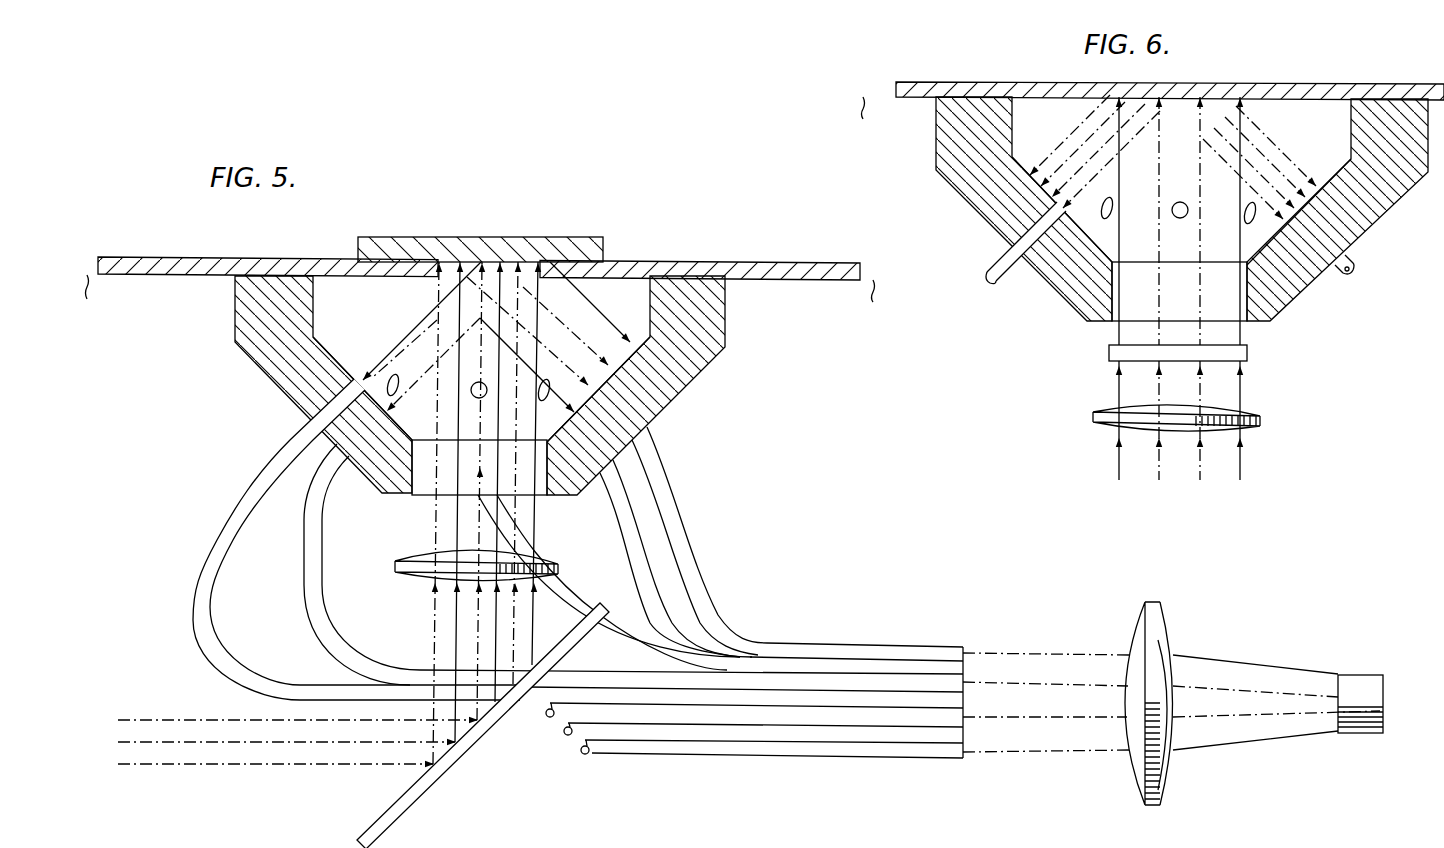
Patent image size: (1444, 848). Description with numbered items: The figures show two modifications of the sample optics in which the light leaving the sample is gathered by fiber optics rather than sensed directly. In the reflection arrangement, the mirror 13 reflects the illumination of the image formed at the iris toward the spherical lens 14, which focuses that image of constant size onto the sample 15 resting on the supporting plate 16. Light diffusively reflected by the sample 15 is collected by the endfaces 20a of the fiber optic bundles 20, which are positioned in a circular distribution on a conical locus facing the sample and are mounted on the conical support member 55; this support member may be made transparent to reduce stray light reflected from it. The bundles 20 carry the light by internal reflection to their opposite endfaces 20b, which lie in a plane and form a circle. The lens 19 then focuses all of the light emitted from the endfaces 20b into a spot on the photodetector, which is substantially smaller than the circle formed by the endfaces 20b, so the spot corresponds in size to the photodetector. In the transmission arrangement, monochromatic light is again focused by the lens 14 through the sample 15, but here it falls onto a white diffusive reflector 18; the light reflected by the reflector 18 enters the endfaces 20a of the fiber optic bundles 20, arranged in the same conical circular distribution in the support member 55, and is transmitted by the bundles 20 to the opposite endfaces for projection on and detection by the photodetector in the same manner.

In FIG. 5, the mirror 13 is at (358, 838).
In FIG. 5, the spherical lens 14 is at (413, 552).
In FIG. 6, the spherical lens 14 is at (1093, 417).
In FIG. 5, the sample 15 is at (569, 238).
In FIG. 6, the sample 15 is at (1250, 353).
In FIG. 5, the supporting plate 16 is at (636, 268).
In FIG. 6, the white diffusive reflector 18 is at (926, 97).
In FIG. 5, the lens 19 is at (1157, 604).
In FIG. 6, the fiber optic bundles 20 is at (1353, 258).
In FIG. 5, the endfaces 20a is at (346, 364).
In FIG. 6, the endfaces 20a is at (1058, 200).
In FIG. 5, the opposite endfaces 20b is at (967, 648).
In FIG. 5, the conical support member 55 is at (703, 356).
In FIG. 6, the conical support member 55 is at (1407, 183).